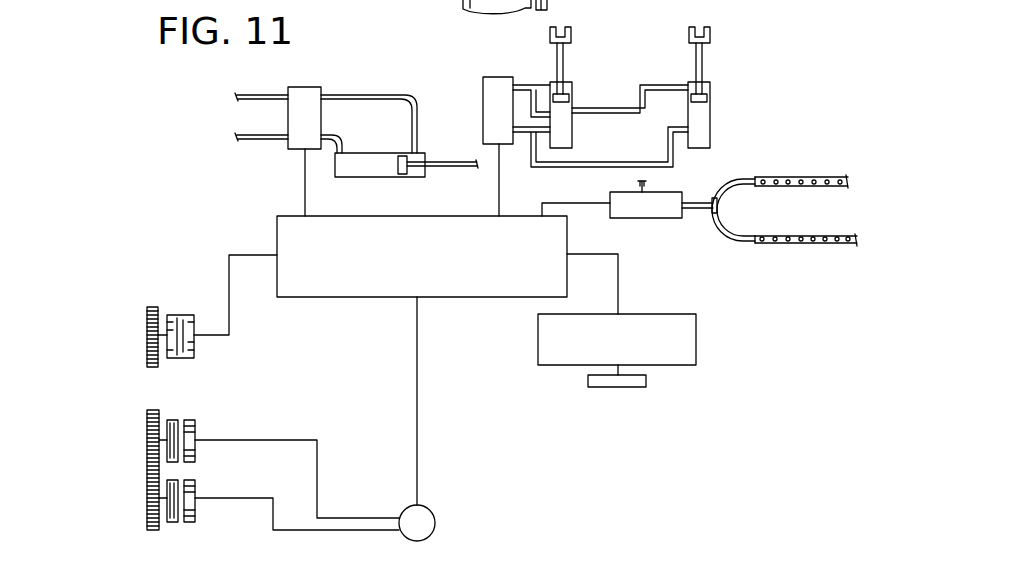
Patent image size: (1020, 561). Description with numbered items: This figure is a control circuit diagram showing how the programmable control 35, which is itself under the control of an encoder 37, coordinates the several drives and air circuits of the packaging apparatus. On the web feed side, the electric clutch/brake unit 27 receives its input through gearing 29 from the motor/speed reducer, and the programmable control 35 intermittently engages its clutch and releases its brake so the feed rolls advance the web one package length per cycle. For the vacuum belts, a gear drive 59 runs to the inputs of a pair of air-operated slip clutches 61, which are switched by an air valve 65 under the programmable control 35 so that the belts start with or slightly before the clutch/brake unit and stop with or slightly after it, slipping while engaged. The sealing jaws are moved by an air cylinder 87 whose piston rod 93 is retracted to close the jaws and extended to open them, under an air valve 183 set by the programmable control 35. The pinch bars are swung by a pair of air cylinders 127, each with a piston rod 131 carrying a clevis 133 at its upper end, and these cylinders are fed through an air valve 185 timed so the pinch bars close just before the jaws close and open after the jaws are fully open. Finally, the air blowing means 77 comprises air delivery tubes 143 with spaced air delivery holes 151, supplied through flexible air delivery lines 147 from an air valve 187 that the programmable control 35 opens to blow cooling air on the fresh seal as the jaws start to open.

The air valve 183 is at (305, 87).
The air valve 185 is at (504, 48).
The clevis 133 is at (572, 33).
The piston rod 131 is at (563, 62).
The air cylinder 127 is at (572, 128).
The air cylinder 87 is at (352, 177).
The piston rod 93 is at (445, 168).
The programmable control 35 is at (278, 214).
The flexible air delivery line 147 is at (706, 275).
The air delivery tube 143 is at (829, 209).
The air delivery holes 151 is at (820, 177).
The air valve 187 is at (660, 218).
The air blowing means 77 is at (782, 262).
The electric clutch/brake unit 27 is at (200, 281).
The gearing 29 is at (147, 330).
The encoder 37 is at (696, 357).
The air-operated slip clutch 61 is at (190, 420).
The gear drive 59 is at (147, 503).
The air valve 65 is at (435, 525).